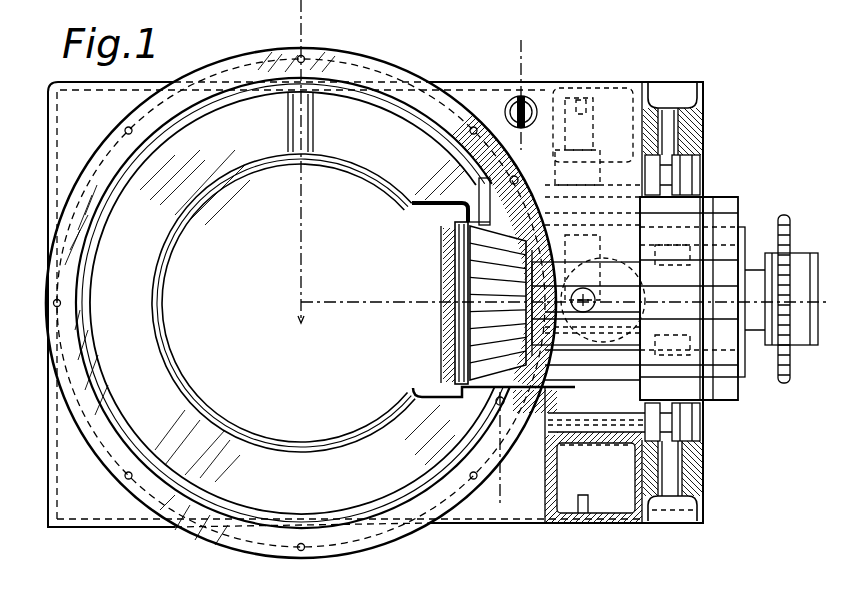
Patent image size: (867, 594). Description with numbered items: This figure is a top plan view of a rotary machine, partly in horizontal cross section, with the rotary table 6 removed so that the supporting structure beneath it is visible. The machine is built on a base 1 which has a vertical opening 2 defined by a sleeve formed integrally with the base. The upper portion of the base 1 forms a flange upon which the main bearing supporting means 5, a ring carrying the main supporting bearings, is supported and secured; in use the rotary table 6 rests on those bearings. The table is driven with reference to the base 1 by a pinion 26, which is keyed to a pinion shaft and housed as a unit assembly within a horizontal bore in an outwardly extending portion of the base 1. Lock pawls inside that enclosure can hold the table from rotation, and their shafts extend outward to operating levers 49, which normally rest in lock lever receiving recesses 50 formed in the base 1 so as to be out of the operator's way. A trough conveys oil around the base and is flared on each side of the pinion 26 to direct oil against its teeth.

The base 1 is at (128, 523).
The vertical opening 2 is at (282, 20).
The main bearing supporting means 5 is at (367, 268).
The rotary table 6 is at (513, 315).
The pinion 26 is at (480, 323).
The operating levers 49 is at (668, 92).
The lock lever receiving recesses 50 is at (678, 118).